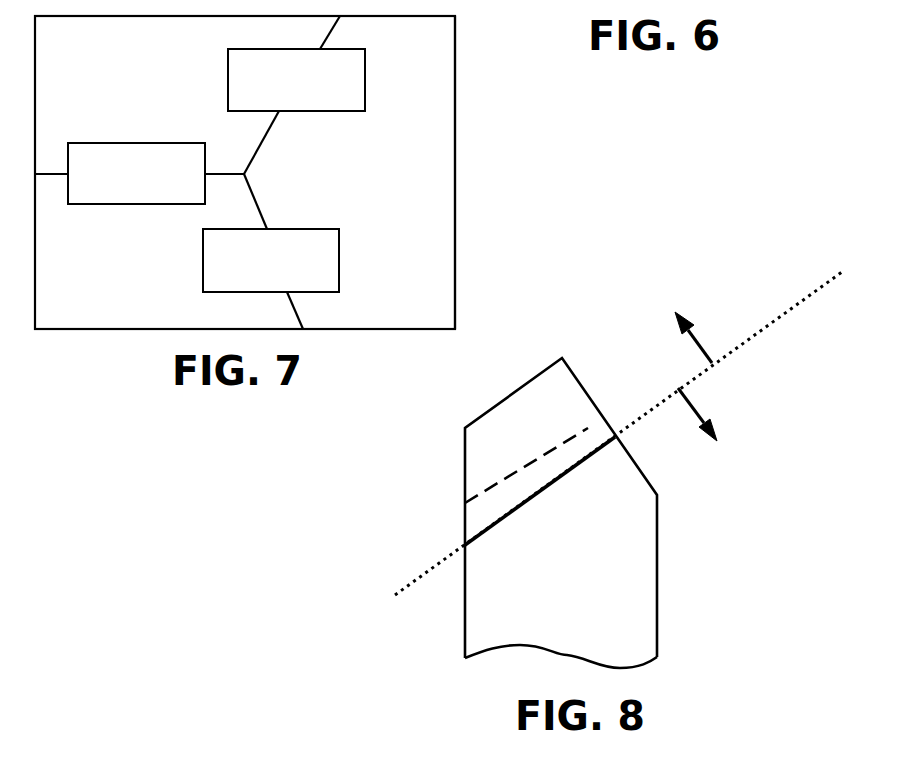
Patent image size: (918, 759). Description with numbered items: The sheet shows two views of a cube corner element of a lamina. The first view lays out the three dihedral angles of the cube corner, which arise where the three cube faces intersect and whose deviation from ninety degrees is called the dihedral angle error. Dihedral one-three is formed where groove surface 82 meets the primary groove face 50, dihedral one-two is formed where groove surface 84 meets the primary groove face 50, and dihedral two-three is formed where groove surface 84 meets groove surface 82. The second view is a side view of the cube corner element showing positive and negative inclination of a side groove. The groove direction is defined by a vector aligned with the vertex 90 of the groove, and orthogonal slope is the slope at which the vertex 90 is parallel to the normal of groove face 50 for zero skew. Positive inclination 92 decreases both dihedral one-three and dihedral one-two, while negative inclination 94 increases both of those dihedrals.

In FIG. 7, the primary groove face 50 is at (401, 172).
In FIG. 8, the primary groove face 50 is at (574, 377).
In FIG. 7, the groove surface 82 is at (200, 95).
In FIG. 7, the groove surface 84 is at (203, 236).
In FIG. 8, the vertex of a groove 90 is at (800, 297).
In FIG. 8, the positive inclination 92 is at (700, 337).
In FIG. 8, the negative inclination 94 is at (697, 399).